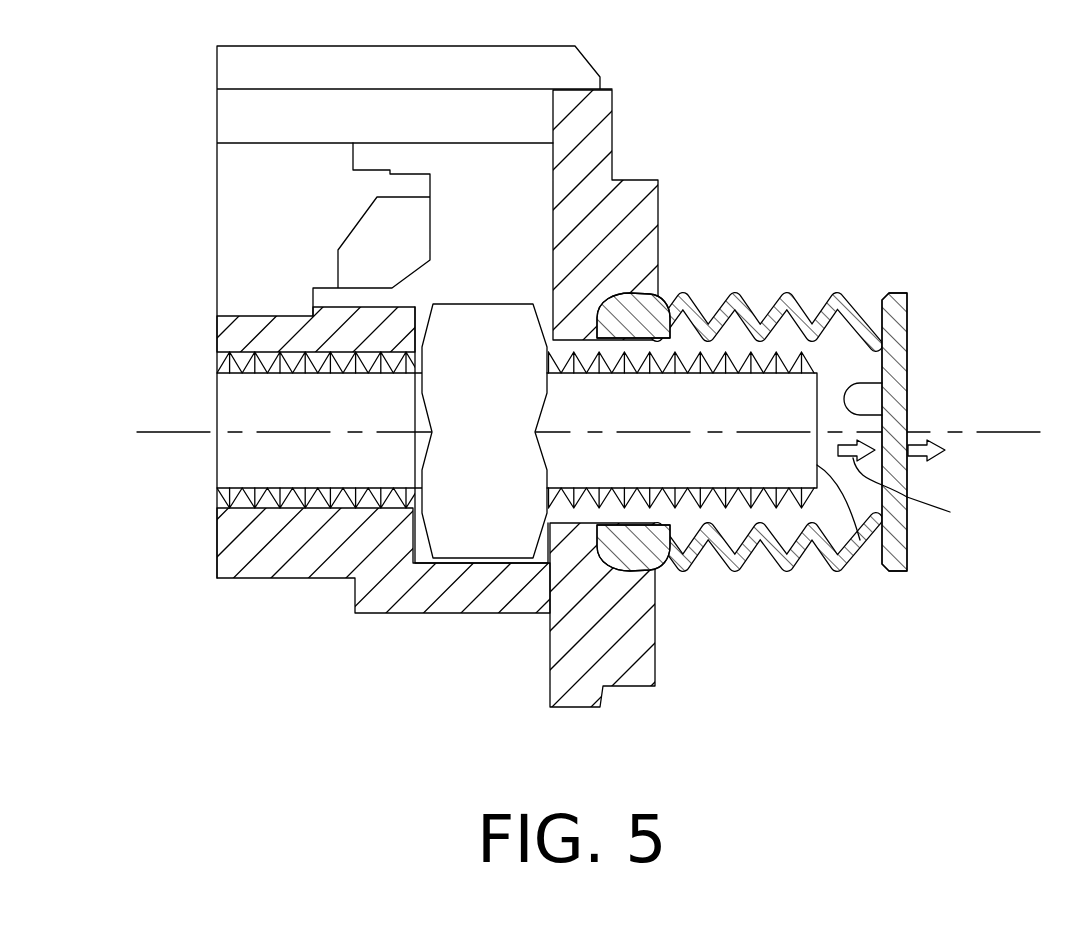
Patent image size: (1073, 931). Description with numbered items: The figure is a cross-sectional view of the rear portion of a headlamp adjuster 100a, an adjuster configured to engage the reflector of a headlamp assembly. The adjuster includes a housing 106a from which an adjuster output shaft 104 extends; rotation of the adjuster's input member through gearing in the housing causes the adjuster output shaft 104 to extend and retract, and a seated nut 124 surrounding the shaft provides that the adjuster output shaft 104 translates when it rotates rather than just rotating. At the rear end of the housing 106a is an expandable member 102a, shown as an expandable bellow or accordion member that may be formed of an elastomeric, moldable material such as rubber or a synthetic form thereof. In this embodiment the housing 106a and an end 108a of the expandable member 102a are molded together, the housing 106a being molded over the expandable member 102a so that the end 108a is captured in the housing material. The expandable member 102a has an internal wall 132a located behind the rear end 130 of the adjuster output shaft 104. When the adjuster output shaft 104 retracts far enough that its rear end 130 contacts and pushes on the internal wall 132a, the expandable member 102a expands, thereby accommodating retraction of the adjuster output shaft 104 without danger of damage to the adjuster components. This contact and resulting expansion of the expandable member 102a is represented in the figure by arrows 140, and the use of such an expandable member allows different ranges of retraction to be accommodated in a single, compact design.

The headlamp adjuster 100a is at (688, 146).
The expandable member 102a is at (826, 291).
The adjuster output shaft 104 is at (685, 513).
The housing 106a is at (668, 230).
The end of the expandable member 108a is at (593, 530).
The seated nut 124 is at (475, 530).
The rear end of the adjuster output shaft 130 is at (862, 541).
The internal wall of the expandable member 132a is at (907, 383).
The arrows 140 is at (921, 458).